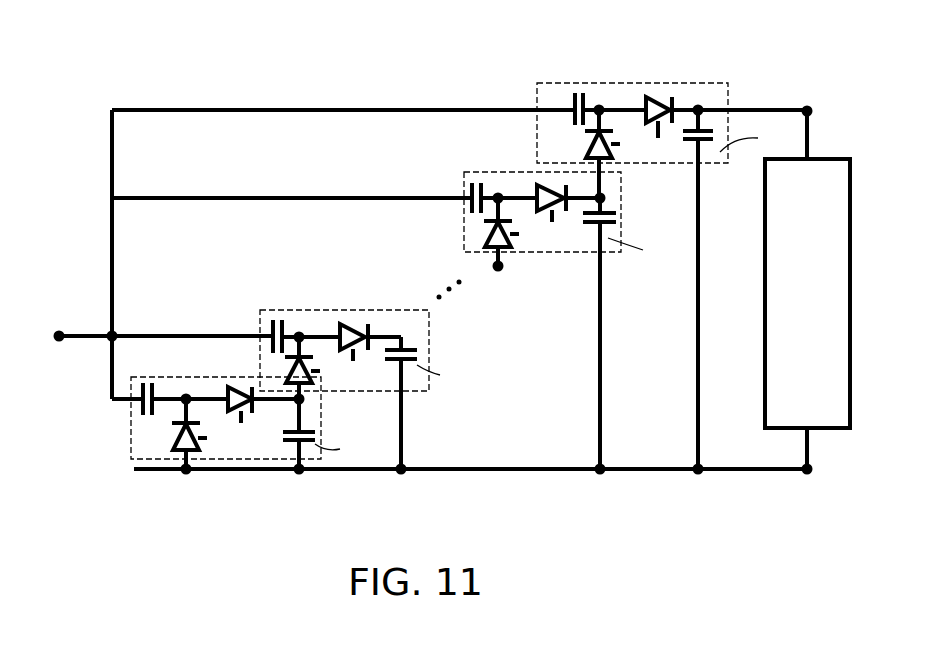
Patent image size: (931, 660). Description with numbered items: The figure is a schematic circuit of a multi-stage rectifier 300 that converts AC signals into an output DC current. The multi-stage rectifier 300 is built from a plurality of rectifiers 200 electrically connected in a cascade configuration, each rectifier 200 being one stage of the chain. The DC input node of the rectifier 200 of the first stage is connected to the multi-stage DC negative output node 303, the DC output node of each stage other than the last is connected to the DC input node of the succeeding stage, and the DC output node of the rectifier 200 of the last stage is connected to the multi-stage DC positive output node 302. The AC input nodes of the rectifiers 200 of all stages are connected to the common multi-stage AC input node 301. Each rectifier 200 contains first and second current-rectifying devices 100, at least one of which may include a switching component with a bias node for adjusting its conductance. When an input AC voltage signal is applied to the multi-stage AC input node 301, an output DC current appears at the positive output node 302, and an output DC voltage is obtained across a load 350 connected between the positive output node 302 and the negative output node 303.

The current-rectifying device 100 is at (199, 428).
The rectifier 200 is at (450, 266).
The multi-stage rectifier 300 is at (309, 224).
The multi-stage AC input node 301 is at (158, 324).
The multi-stage DC positive output node 302 is at (763, 97).
The multi-stage DC negative output node 303 is at (481, 487).
The load 350 is at (807, 290).